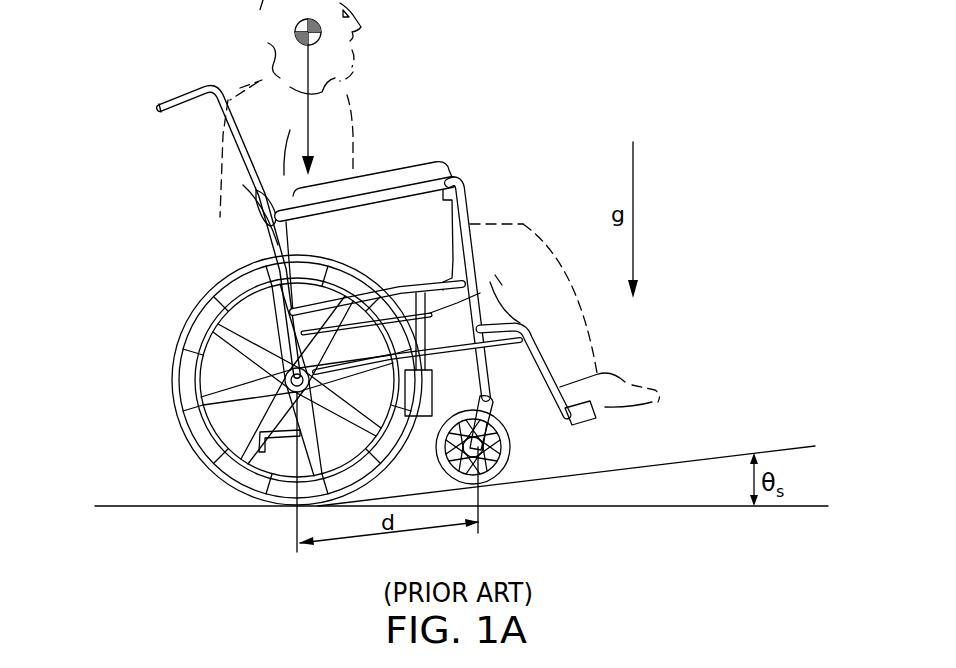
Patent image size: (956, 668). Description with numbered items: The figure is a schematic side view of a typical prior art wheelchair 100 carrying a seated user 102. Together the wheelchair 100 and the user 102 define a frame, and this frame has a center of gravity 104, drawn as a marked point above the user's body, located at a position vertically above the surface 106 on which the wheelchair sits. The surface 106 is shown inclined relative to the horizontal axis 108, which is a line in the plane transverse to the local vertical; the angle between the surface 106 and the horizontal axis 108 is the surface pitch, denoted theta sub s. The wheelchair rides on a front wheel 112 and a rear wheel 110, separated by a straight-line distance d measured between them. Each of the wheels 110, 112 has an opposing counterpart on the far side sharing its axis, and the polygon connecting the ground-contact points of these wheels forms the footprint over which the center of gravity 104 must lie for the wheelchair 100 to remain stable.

The wheelchair 100 is at (124, 143).
The user 102 is at (355, 135).
The center of gravity 104 is at (294, 30).
The surface 106 is at (785, 446).
The horizontal axis 108 is at (784, 510).
The rear wheel 110 is at (172, 382).
The front wheel 112 is at (512, 451).